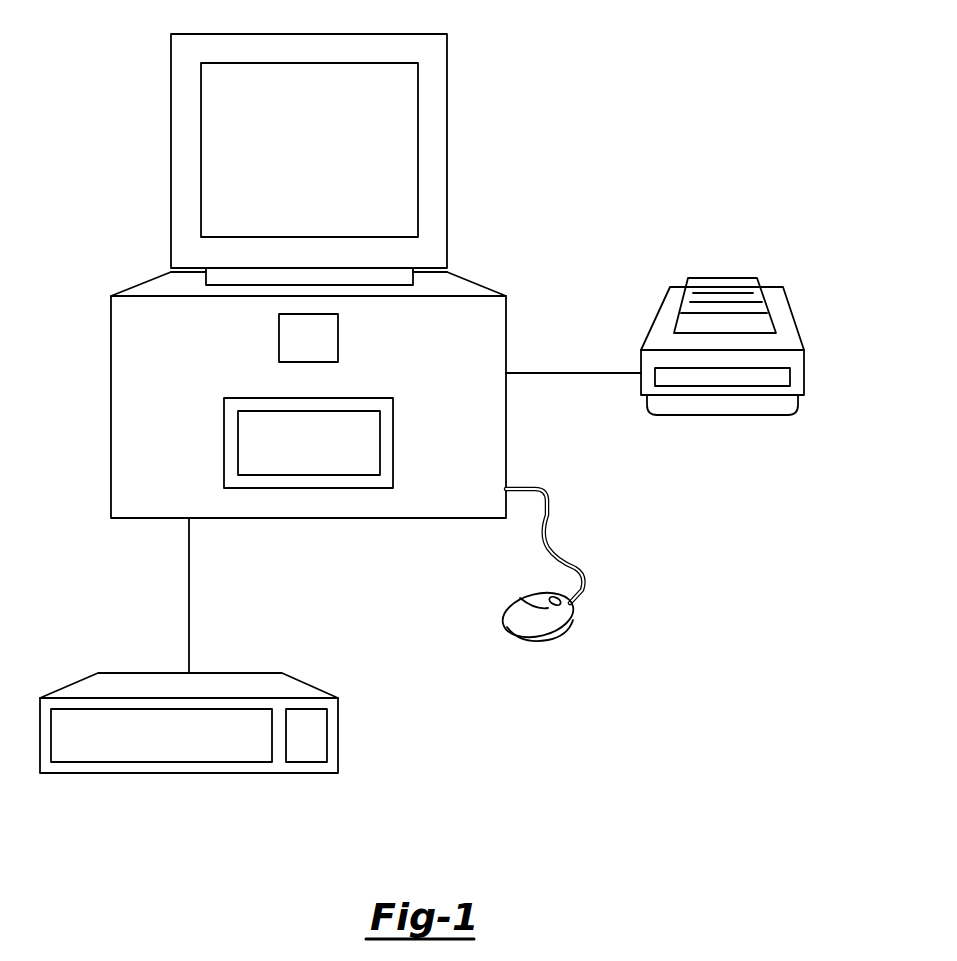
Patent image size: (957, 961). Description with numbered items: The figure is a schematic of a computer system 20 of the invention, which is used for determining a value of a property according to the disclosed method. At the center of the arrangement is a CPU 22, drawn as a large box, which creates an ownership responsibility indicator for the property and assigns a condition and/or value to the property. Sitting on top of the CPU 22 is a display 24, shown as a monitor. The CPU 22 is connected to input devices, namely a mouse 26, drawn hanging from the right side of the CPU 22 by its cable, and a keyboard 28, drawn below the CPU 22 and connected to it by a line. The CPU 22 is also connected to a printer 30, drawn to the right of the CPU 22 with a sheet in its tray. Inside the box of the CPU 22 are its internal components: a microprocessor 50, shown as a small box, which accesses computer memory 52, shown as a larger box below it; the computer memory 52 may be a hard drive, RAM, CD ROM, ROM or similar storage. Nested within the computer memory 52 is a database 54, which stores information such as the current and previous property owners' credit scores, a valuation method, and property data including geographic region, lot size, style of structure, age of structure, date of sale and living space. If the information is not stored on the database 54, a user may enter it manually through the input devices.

The computer system 20 is at (678, 52).
The CPU 22 is at (111, 408).
The display 24 is at (449, 67).
The mouse 26 is at (508, 611).
The keyboard 28 is at (183, 776).
The printer 30 is at (787, 303).
The microprocessor 50 is at (279, 342).
The computer memory 52 is at (224, 447).
The database 54 is at (380, 447).